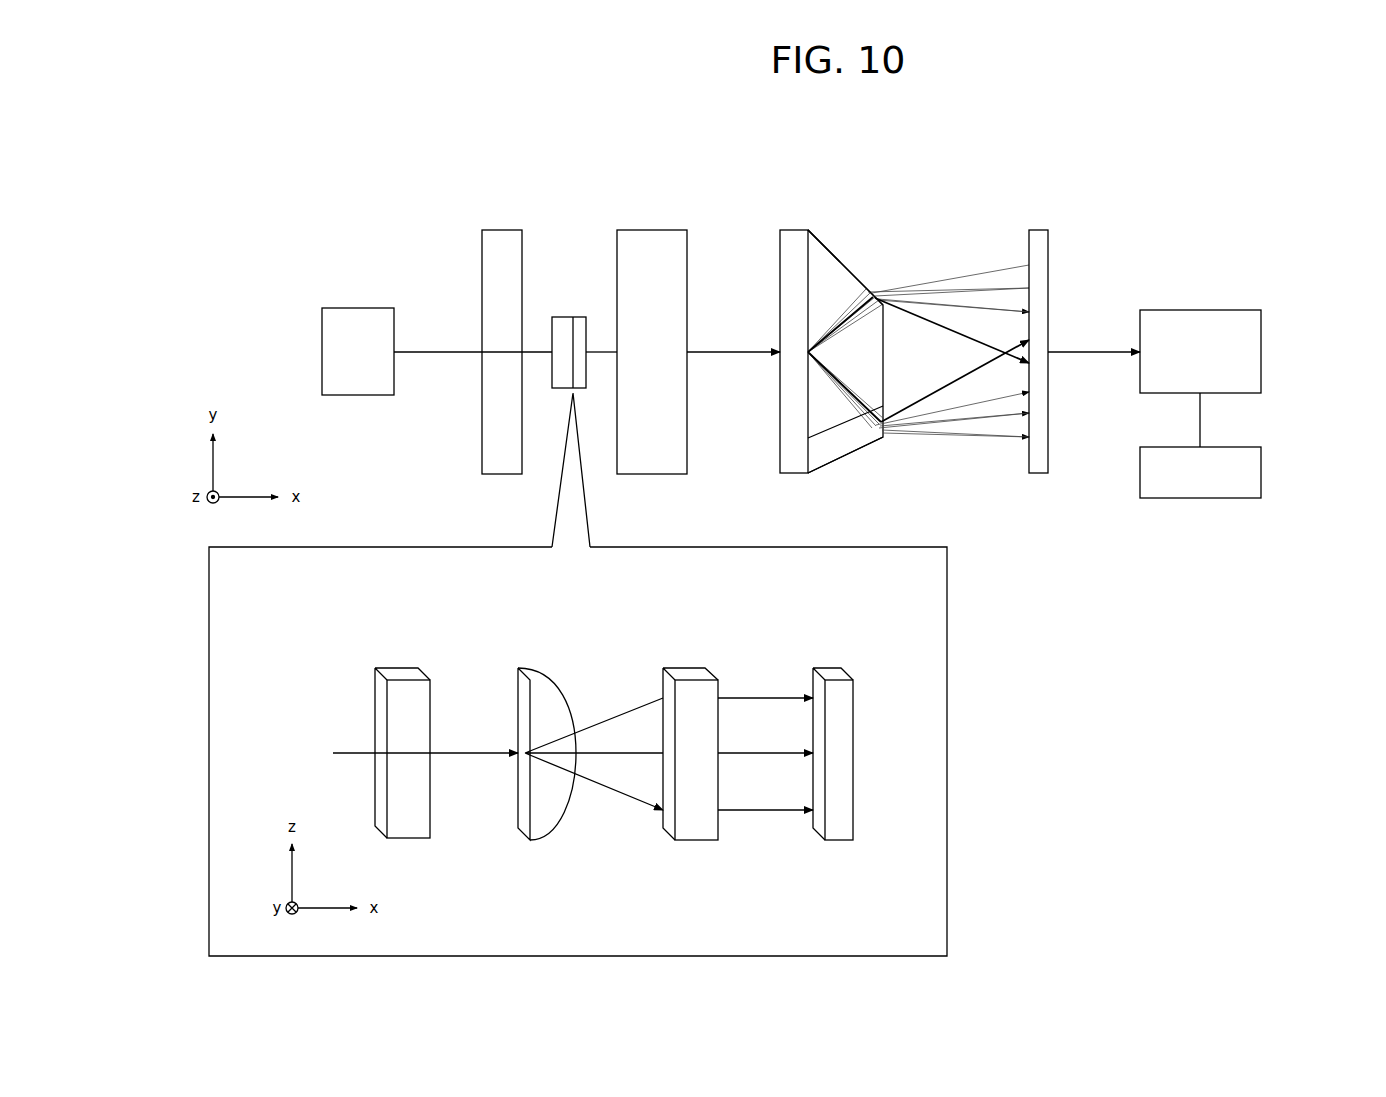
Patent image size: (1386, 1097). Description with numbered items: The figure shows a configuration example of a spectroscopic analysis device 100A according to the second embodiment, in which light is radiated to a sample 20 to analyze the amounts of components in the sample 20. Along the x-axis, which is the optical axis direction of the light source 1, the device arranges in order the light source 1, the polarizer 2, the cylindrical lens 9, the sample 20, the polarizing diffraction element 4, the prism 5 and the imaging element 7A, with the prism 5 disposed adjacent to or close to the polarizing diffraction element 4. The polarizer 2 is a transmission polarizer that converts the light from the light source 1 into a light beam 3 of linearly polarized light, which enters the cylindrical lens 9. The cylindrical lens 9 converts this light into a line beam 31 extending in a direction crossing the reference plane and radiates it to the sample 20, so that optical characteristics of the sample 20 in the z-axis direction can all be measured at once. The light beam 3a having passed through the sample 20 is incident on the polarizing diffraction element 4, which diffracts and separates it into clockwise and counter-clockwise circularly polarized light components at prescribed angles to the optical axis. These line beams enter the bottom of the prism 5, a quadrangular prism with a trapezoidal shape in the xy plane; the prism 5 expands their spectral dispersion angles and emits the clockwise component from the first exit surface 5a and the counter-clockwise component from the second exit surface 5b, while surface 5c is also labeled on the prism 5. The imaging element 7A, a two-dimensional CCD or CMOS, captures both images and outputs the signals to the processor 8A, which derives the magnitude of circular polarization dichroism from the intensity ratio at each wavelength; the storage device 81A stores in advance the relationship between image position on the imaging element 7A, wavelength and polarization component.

The light source 1 is at (357, 308).
The polarizer 2 is at (503, 230).
The light beam of linearly polarized light 3 is at (537, 348).
The light beam 3a is at (727, 348).
The line beam 31 is at (604, 348).
The cylindrical lens 9 is at (564, 317).
The sample 20 is at (653, 230).
The polarizing diffraction element 4 is at (797, 230).
The prism 5 is at (872, 264).
The first exit surface 5a is at (835, 259).
The second exit surface 5b is at (838, 445).
The prism surface 5c is at (810, 263).
The imaging element 7A is at (1050, 428).
The processor 8A is at (1199, 310).
The storage device 81A is at (1262, 470).
The spectroscopic analysis device 100A is at (1093, 234).